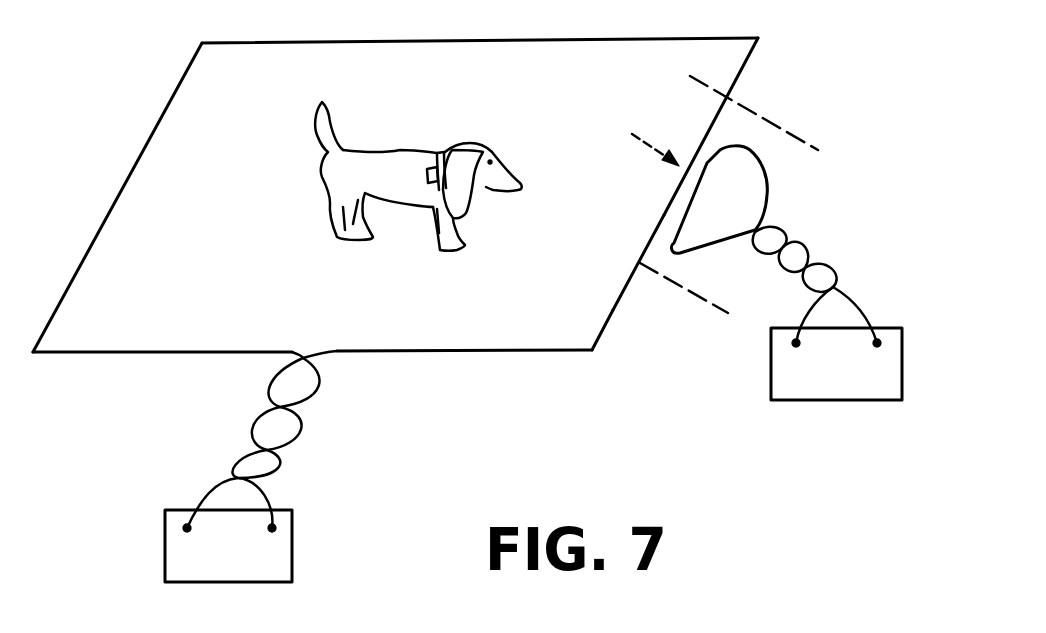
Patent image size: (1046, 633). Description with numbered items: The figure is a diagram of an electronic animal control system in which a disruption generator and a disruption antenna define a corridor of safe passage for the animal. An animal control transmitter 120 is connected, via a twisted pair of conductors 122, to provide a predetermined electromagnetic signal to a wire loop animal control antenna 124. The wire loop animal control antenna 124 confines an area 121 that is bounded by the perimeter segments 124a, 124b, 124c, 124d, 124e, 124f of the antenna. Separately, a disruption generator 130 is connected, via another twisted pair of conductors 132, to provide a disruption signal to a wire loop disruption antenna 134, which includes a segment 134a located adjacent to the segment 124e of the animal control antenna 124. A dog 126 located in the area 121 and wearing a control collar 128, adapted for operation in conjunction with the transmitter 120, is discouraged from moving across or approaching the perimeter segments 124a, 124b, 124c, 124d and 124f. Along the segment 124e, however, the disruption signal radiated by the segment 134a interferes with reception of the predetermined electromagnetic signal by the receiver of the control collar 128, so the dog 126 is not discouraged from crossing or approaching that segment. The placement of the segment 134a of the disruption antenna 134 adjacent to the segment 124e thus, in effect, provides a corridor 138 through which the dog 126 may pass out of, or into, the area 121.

The animal control transmitter 120 is at (292, 518).
The area 121 is at (408, 127).
The twisted pair of conductors 122 is at (315, 390).
The wire loop animal control antenna 124 is at (395, 222).
The perimeter segment 124a is at (173, 352).
The perimeter segment 124b is at (143, 157).
The perimeter segment 124c is at (372, 43).
The perimeter segment 124d is at (737, 78).
The perimeter segment 124e is at (660, 216).
The perimeter segment 124f is at (613, 310).
The dog 126 is at (419, 187).
The control collar 128 is at (450, 153).
The disruption generator 130 is at (771, 370).
The twisted pair of conductors 132 is at (797, 257).
The wire loop disruption antenna 134 is at (775, 199).
The segment of disruption antenna 134a is at (768, 203).
The corridor 138 is at (634, 143).